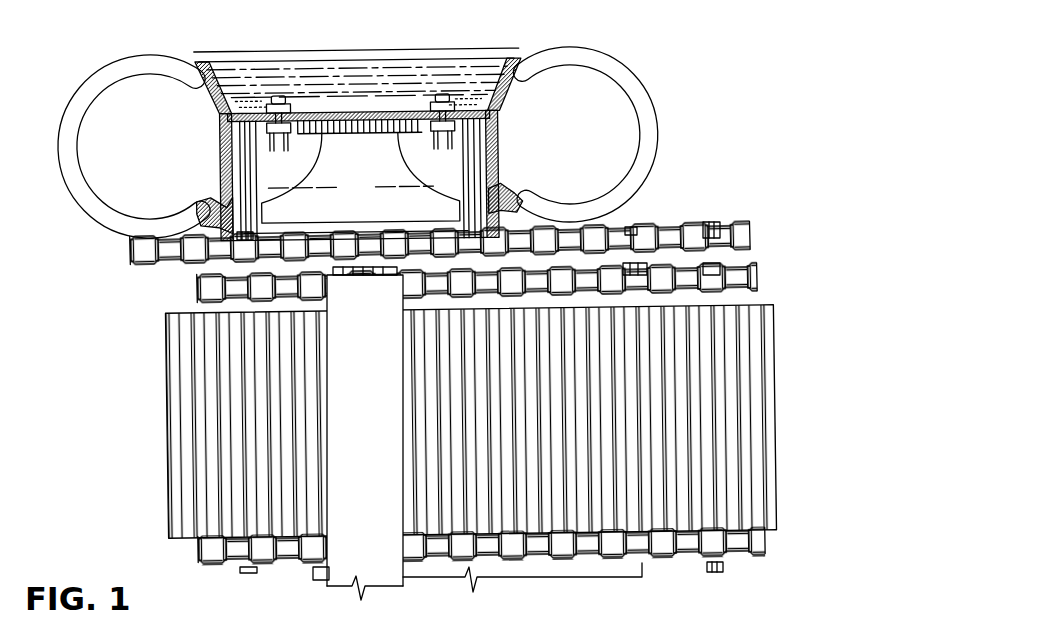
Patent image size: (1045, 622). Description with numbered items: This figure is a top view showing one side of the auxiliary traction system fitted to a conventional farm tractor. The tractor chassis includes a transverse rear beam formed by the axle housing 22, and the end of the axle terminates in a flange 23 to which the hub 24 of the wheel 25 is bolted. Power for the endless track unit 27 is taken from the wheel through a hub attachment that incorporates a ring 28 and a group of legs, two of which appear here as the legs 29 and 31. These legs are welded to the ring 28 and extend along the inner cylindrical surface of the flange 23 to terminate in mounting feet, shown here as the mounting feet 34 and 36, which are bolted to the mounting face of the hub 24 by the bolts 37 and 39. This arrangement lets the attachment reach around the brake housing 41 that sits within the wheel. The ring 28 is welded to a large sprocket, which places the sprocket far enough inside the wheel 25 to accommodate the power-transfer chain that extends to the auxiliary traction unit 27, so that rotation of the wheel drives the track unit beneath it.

The axle housing 22 is at (347, 587).
The flange 23 is at (338, 112).
The hub 24 is at (398, 67).
The wheel 25 is at (643, 85).
The endless track unit 27 is at (158, 417).
The ring 28 is at (228, 239).
The leg 29 is at (250, 161).
The leg 31 is at (483, 167).
The mounting foot 34 is at (222, 142).
The mounting foot 36 is at (501, 143).
The bolt 37 is at (280, 95).
The bolt 39 is at (444, 96).
The brake housing 41 is at (308, 180).